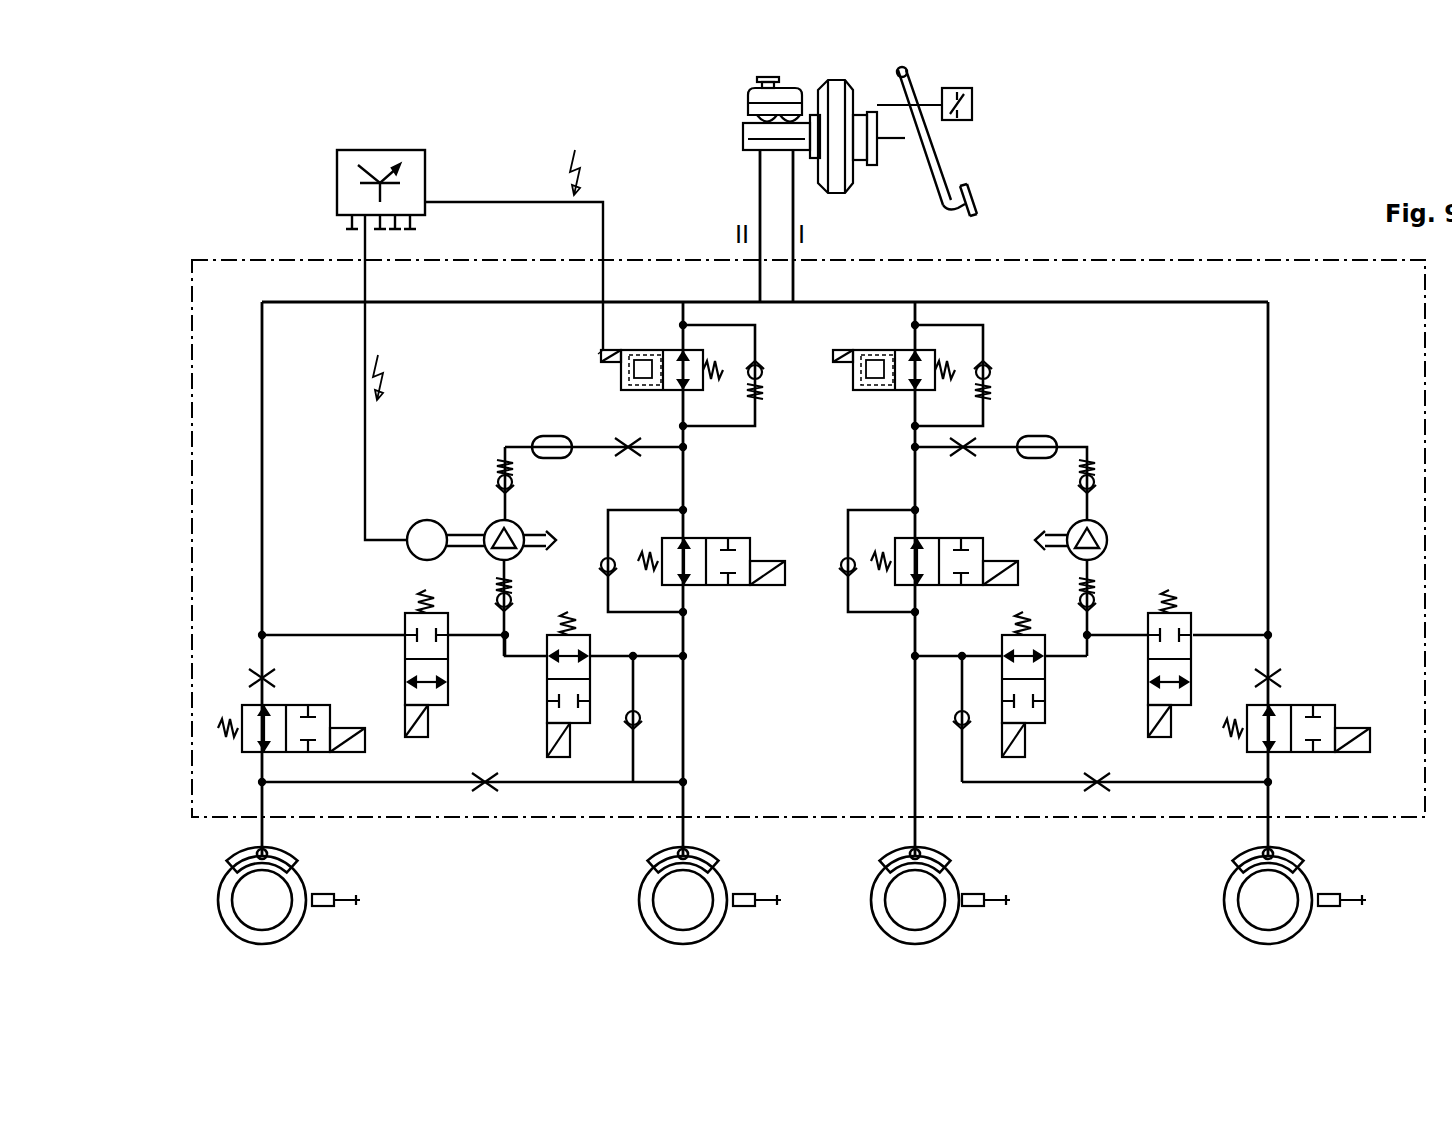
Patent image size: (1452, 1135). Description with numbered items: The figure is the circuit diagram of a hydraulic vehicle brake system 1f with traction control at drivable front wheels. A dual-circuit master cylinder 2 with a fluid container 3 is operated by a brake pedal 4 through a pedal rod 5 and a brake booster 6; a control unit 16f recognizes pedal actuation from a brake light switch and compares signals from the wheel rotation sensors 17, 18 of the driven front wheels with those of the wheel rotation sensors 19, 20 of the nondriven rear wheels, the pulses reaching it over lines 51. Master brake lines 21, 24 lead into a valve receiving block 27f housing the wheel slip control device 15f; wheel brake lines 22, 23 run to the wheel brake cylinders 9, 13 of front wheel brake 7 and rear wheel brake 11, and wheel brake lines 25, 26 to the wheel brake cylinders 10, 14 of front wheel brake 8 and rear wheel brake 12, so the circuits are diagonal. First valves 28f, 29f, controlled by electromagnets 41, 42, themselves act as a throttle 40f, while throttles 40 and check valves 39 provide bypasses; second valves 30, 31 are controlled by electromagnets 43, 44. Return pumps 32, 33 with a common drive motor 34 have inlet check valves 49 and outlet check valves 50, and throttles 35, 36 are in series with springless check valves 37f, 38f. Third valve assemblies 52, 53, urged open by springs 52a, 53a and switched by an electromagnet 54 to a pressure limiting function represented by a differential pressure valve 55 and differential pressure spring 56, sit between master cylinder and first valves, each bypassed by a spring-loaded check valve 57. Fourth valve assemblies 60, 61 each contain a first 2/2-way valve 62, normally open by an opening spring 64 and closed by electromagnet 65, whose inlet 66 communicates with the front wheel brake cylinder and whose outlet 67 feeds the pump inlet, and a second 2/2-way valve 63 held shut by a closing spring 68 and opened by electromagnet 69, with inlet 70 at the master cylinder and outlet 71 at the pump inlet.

The hydraulic vehicle brake system 1f is at (1230, 205).
The dual-circuit master cylinder 2 is at (743, 130).
The fluid container 3 is at (748, 100).
The brake pedal 4 is at (975, 192).
The pedal rod 5 is at (912, 128).
The brake booster 6 is at (850, 180).
The front wheel brake 7 is at (875, 900).
The front wheel brake 8 is at (642, 900).
The wheel brake cylinder 9 is at (882, 852).
The wheel brake cylinder 10 is at (642, 852).
The rear wheel brake 11 is at (1228, 900).
The rear wheel brake 12 is at (222, 900).
The wheel brake cylinder 13 is at (1230, 852).
The wheel brake cylinder 14 is at (240, 852).
The wheel slip control device 15f is at (1050, 245).
The control unit 16f is at (337, 165).
The wheel rotation sensor 17 is at (970, 893).
The wheel rotation sensor 18 is at (757, 893).
The wheel rotation sensor 19 is at (1323, 893).
The wheel rotation sensor 20 is at (320, 893).
The master brake line 21 is at (793, 200).
The wheel brake line 22 is at (915, 835).
The wheel brake line 23 is at (1268, 835).
The master brake line 24 is at (760, 180).
The wheel brake line 25 is at (685, 832).
The wheel brake line 26 is at (262, 835).
The valve receiving block 27f is at (1143, 255).
The first valve 28f is at (941, 635).
The first valve 29f is at (690, 598).
The second valve 30 is at (1282, 710).
The second valve 31 is at (275, 752).
The return pump 32 is at (1105, 530).
The return pump 33 is at (494, 522).
The drive motor 34 is at (427, 520).
The throttle 35 is at (1097, 792).
The throttle 36 is at (485, 792).
The check valve 37f is at (958, 735).
The check valve 38f is at (636, 735).
The check valve 39 is at (605, 555).
The throttle 40 is at (258, 675).
The throttle 40f is at (692, 572).
The electromagnet 41 is at (985, 565).
The electromagnet 42 is at (760, 565).
The electromagnet 43 is at (1350, 730).
The electromagnet 44 is at (355, 735).
The inlet check valve 49 is at (512, 600).
The outlet check valve 50 is at (503, 468).
The line 51 is at (996, 893).
The third electrically controllable valve assembly 52 is at (903, 392).
The spring 52a is at (968, 352).
The third electrically controllable valve assembly 53 is at (668, 392).
The spring 53a is at (722, 362).
The electromagnet 54 is at (848, 360).
The differential pressure valve 55 is at (872, 392).
The differential pressure spring 56 is at (884, 392).
The spring-loaded check valve 57 is at (758, 400).
The fourth valve assembly 60 is at (1092, 713).
The fourth valve assembly 61 is at (473, 675).
The first 2/2-way valve 62 is at (595, 642).
The second 2/2-way valve 63 is at (405, 620).
The opening spring 64 is at (1022, 618).
The electromagnet 65 is at (1015, 760).
The inlet 66 is at (1002, 658).
The outlet 67 is at (1045, 660).
The closing spring 68 is at (1170, 595).
The electromagnet 69 is at (1022, 735).
The inlet 70 is at (1195, 632).
The outlet 71 is at (1150, 630).